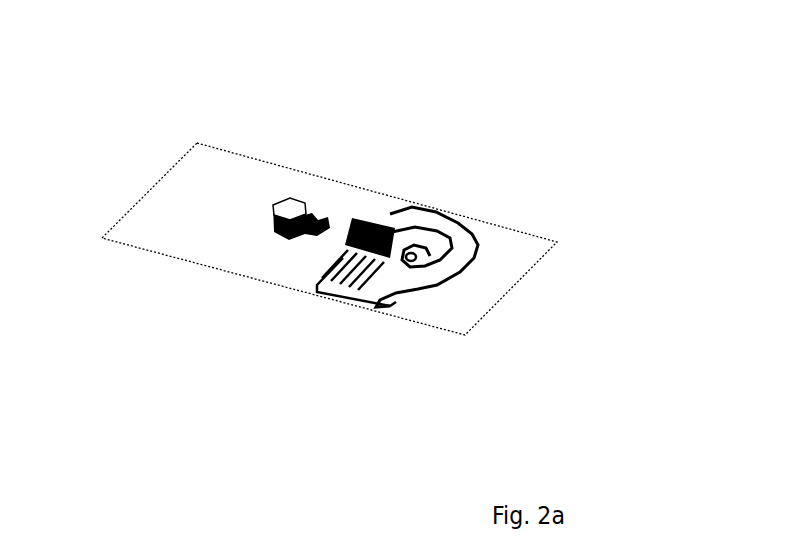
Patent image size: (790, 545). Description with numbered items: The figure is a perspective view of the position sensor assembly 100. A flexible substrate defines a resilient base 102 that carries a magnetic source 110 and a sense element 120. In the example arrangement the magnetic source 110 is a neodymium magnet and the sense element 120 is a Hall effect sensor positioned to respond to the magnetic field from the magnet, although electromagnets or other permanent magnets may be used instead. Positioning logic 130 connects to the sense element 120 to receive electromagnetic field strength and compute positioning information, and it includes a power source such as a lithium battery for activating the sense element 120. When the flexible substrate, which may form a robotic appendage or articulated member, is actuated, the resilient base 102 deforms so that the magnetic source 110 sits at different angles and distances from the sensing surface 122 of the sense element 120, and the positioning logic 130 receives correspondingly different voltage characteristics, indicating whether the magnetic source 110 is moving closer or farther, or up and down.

The position sensor assembly 100 is at (177, 128).
The resilient base 102 is at (215, 188).
The magnetic source 110 is at (296, 207).
The sense element 120 is at (317, 283).
The sensing surface 122 is at (380, 218).
The positioning logic 130 is at (433, 210).